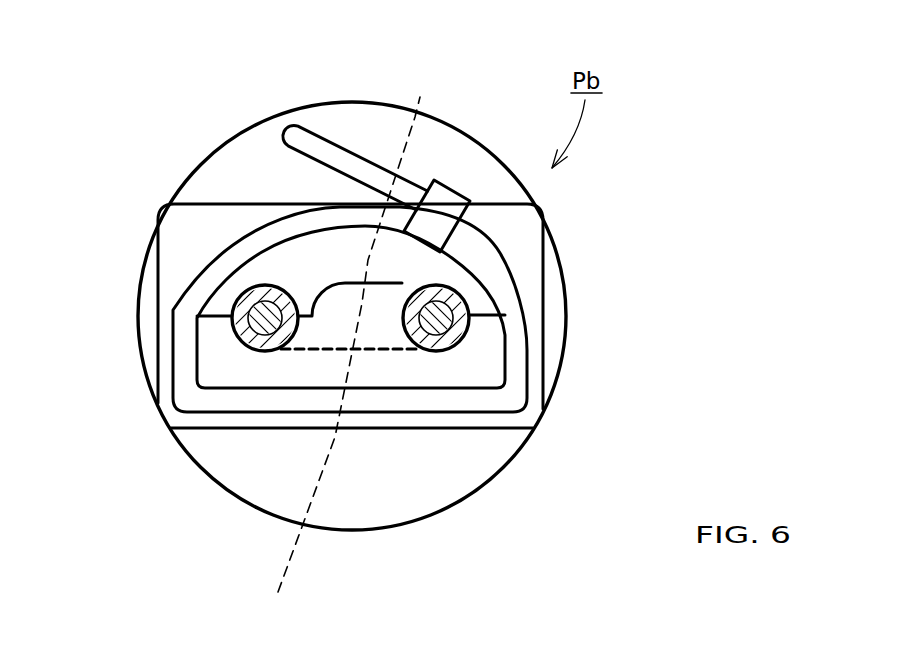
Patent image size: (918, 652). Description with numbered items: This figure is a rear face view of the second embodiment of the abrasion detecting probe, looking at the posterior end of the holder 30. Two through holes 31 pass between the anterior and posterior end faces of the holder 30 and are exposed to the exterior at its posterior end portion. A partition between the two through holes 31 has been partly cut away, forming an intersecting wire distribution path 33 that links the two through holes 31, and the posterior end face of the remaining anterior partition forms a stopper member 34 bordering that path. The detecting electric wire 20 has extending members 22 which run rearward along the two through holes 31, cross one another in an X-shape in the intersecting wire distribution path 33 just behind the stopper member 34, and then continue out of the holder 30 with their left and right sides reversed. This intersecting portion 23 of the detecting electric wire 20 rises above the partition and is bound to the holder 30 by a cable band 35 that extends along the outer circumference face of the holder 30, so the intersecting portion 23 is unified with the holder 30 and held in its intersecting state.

The detecting electric wire 20 is at (246, 280).
The extending members 22 is at (237, 299).
The intersecting portion 23 is at (343, 250).
The holder 30 is at (460, 484).
The through holes 31 is at (276, 352).
The intersecting wire distribution path 33 is at (343, 360).
The stopper member 34 is at (420, 97).
The cable band 35 is at (391, 400).